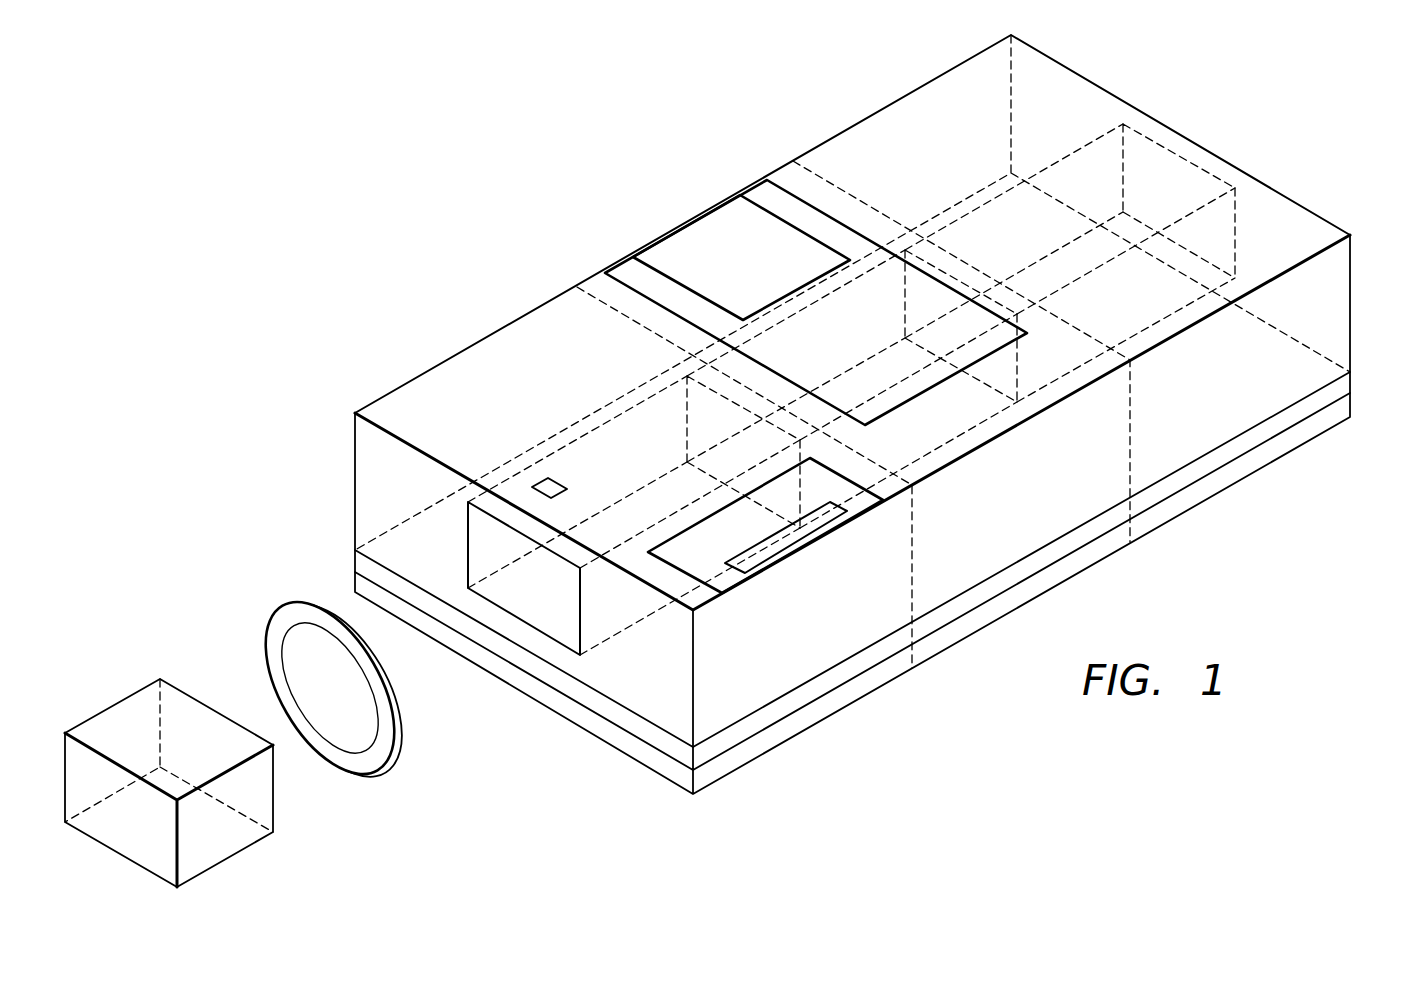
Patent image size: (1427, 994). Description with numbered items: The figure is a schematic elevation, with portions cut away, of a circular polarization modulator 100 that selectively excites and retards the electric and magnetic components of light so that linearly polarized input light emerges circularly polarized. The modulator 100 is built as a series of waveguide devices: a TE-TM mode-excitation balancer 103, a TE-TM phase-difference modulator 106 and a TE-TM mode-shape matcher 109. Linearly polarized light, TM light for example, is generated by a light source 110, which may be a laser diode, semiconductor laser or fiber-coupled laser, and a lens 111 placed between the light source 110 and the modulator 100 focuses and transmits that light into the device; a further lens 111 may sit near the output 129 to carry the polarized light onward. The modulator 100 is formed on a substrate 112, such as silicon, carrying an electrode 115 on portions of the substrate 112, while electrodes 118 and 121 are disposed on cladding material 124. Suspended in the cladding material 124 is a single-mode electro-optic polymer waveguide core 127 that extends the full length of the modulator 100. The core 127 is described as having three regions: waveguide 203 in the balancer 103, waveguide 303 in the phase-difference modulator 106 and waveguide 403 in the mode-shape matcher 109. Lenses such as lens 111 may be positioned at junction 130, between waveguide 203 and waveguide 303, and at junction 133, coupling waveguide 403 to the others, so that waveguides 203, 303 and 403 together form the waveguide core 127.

The circular polarization modulator 100 is at (572, 206).
The TE-TM mode-excitation balancer 103 is at (468, 352).
The TE-TM phase-difference modulator 106 is at (692, 224).
The TE-TM mode-shape matcher 109 is at (905, 103).
The light source 110 is at (120, 707).
The lens 111 is at (407, 728).
The substrate 112 is at (1346, 418).
The electrode 115 is at (1346, 380).
The electrode 118 is at (725, 580).
The electrode 121 is at (757, 192).
The cladding material 124 is at (1354, 302).
The waveguide core 127 is at (605, 628).
The output 129 is at (1182, 172).
The junction 130 is at (686, 420).
The junction 133 is at (1020, 378).
The waveguide 203 is at (625, 410).
The waveguide 303 is at (948, 435).
The waveguide 403 is at (1075, 157).